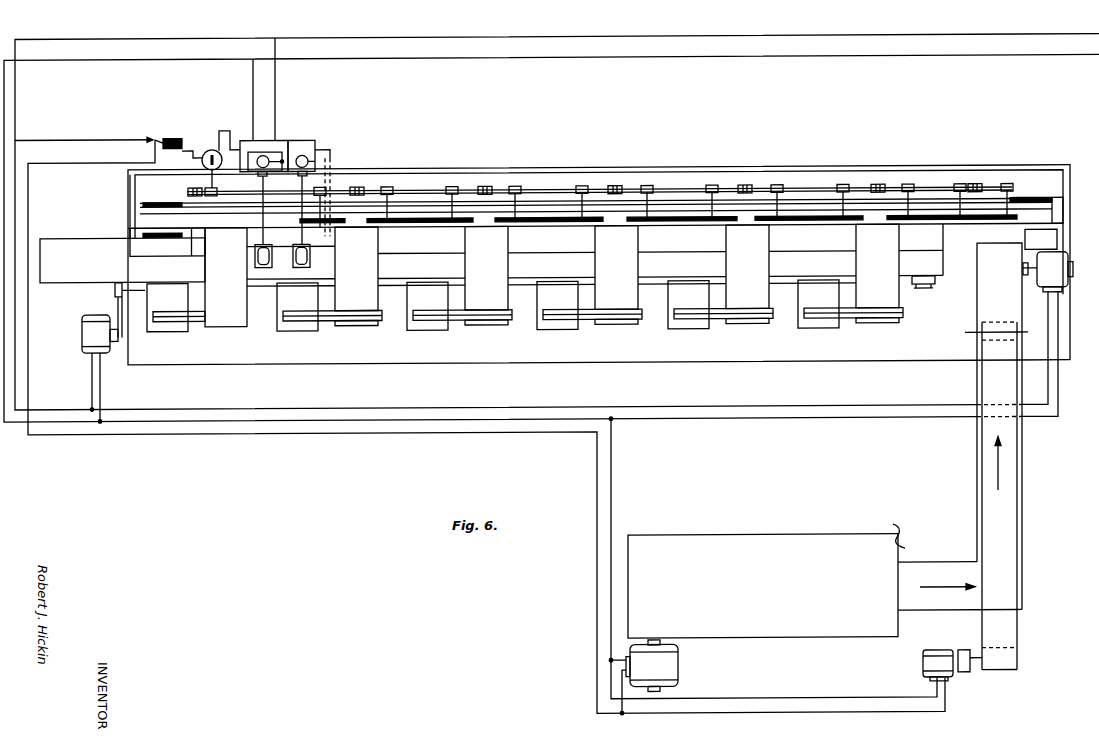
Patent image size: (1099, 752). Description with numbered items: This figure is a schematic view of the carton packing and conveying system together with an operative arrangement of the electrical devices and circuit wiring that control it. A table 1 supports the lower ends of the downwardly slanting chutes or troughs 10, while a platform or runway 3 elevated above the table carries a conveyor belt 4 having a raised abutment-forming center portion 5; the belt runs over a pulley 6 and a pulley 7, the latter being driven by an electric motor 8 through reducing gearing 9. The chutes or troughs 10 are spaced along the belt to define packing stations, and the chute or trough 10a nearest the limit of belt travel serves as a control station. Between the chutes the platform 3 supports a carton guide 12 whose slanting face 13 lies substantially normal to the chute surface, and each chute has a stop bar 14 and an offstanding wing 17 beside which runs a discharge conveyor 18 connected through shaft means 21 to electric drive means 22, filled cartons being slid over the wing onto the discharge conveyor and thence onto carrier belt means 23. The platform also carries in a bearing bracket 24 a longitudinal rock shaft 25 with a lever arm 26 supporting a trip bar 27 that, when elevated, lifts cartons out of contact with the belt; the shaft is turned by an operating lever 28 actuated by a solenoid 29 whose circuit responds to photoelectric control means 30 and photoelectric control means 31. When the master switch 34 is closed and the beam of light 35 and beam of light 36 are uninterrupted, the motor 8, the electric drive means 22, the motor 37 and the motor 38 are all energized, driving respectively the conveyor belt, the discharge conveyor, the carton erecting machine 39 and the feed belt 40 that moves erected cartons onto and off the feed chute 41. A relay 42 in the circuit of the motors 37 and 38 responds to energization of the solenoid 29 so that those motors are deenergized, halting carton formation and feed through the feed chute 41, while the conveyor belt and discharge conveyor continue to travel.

The table 1 is at (506, 362).
The platform or runway 3 is at (431, 163).
The conveyor belt 4 is at (140, 207).
The raised abutment-forming center portion 5 is at (140, 221).
The pulley 6 is at (153, 236).
The pulley 7 is at (1038, 203).
The electric motor 8 is at (1047, 285).
The reducing gearing 9 is at (1023, 274).
The chute or trough 10 is at (617, 275).
The chute or trough 10a is at (226, 277).
The carton guide 12 is at (427, 260).
The slanting face 13 is at (403, 258).
The stop bar 14 is at (235, 306).
The offstanding wing 17 is at (193, 305).
The discharge conveyor 18 is at (165, 333).
The shaft means 21 is at (115, 293).
The electric drive means 22 is at (82, 331).
The carrier belt means 23 is at (948, 279).
The bearing bracket 24 is at (188, 192).
The rock shaft 25 is at (548, 189).
The lever arm 26 is at (585, 214).
The trip bar 27 is at (339, 226).
The operating lever 28 is at (218, 184).
The solenoid 29 is at (208, 150).
The photoelectric control means 30 is at (294, 261).
The photoelectric control means 31 is at (301, 142).
The master switch 34 is at (15, 96).
The beam of light 35 is at (258, 219).
The beam of light 36 is at (303, 182).
The motor 37 is at (678, 670).
The motor 38 is at (923, 673).
The carton erecting machine 39 is at (770, 644).
The feed belt 40 is at (1020, 592).
The feed chute 41 is at (977, 311).
The relay 42 is at (167, 138).